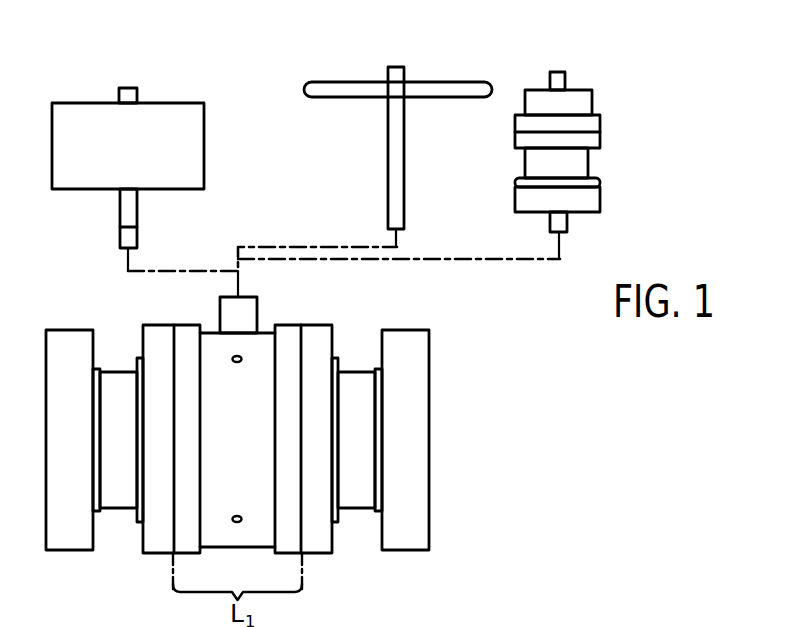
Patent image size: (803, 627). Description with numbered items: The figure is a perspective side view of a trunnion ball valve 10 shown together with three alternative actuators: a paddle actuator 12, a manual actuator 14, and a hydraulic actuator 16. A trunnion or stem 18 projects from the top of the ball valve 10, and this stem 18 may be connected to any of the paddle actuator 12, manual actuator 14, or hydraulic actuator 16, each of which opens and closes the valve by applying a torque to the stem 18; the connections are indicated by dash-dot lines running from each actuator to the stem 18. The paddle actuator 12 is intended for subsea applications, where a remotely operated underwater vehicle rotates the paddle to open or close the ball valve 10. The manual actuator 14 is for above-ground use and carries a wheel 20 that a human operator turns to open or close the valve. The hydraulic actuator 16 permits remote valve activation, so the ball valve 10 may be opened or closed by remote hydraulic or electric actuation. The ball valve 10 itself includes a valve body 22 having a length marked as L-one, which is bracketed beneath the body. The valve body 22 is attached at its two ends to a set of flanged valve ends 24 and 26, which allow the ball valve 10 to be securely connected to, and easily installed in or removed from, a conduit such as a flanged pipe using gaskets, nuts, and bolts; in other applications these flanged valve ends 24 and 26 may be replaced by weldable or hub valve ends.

The trunnion ball valve 10 is at (283, 433).
The paddle actuator 12 is at (168, 188).
The manual actuator 14 is at (397, 67).
The hydraulic actuator 16 is at (580, 112).
The trunnion or stem 18 is at (220, 315).
The wheel 20 is at (444, 82).
The valve body 22 is at (285, 325).
The flanged valve end 24 is at (70, 552).
The flanged valve end 26 is at (405, 552).